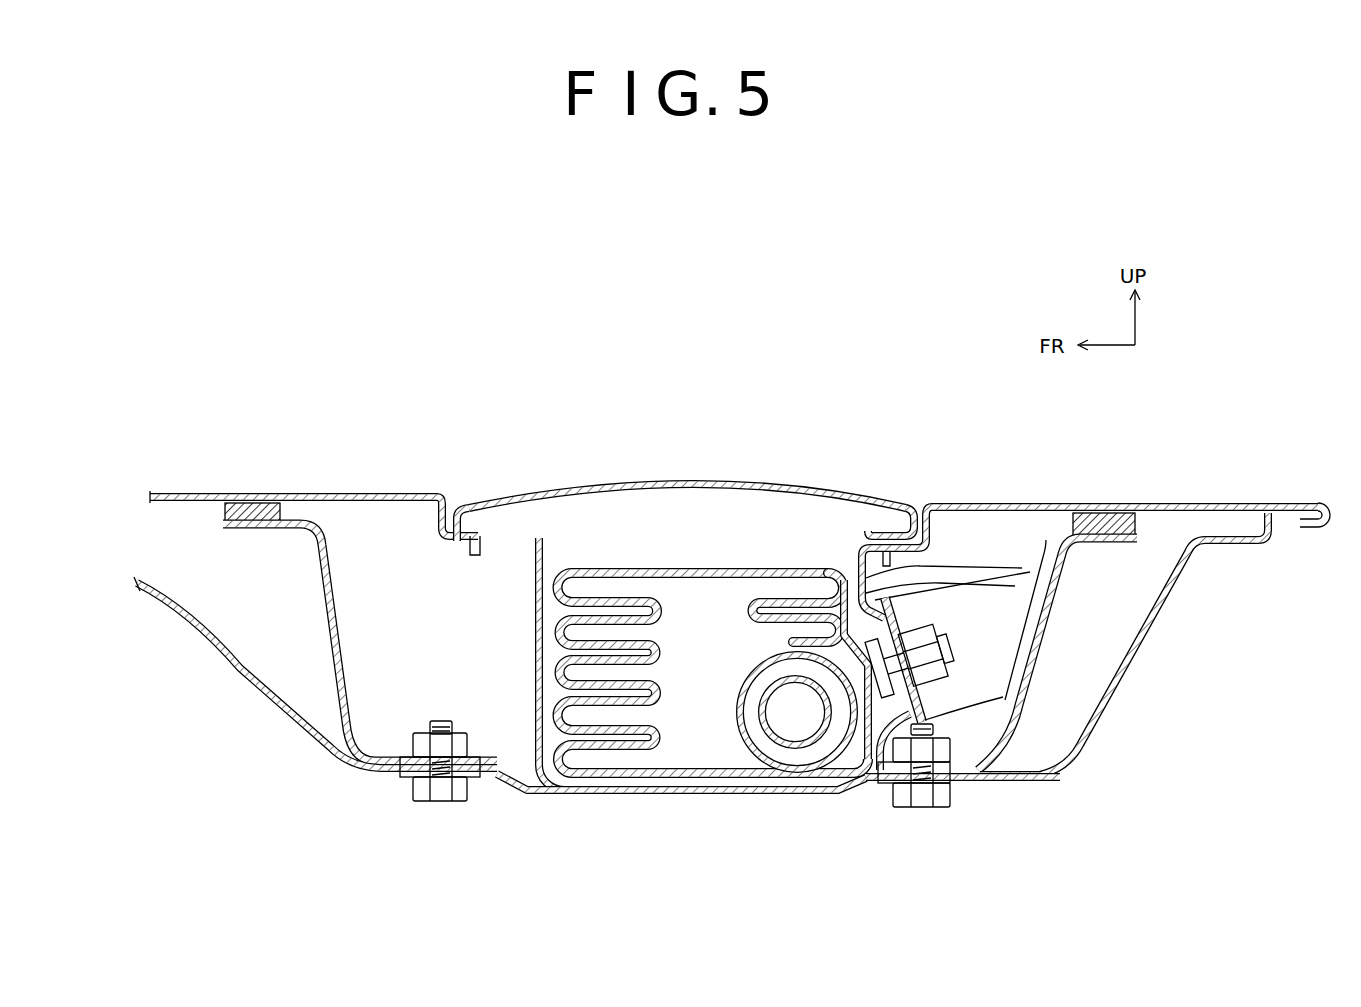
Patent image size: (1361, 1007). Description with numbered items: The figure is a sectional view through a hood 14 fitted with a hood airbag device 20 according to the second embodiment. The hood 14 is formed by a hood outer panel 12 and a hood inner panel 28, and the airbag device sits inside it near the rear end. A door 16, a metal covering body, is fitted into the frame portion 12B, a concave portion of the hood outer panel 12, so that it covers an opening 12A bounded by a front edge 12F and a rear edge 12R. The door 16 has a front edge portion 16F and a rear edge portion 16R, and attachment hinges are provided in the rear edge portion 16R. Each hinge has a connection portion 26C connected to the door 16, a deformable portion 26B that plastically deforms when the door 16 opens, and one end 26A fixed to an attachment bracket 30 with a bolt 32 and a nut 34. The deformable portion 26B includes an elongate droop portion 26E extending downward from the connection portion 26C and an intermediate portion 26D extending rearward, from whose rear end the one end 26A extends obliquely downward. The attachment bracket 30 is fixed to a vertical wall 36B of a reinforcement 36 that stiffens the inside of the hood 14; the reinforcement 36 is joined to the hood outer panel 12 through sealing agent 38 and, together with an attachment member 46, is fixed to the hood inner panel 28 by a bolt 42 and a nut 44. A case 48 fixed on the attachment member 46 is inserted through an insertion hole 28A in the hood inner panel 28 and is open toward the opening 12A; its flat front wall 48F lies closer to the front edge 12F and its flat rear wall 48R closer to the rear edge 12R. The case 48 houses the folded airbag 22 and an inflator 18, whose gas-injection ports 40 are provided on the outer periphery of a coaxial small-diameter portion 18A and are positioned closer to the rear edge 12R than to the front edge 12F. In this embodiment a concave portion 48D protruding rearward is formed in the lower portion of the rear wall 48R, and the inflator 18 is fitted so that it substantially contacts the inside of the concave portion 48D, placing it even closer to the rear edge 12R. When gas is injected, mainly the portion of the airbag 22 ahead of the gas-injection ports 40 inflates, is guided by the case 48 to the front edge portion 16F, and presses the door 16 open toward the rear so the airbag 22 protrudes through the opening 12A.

The hood outer panel 12 is at (372, 490).
The opening 12A is at (499, 523).
The frame portion 12B is at (440, 540).
The front edge 12F is at (478, 555).
The rear edge 12R is at (884, 542).
The hood 14 is at (245, 450).
The door 16 is at (668, 478).
The front edge portion 16F is at (448, 514).
The rear edge portion 16R is at (915, 518).
The inflator 18 is at (757, 688).
The small-diameter portion 18A is at (752, 683).
The hood airbag device 20 is at (720, 415).
The airbag 22 is at (714, 567).
The one end 26A is at (887, 781).
The deformable portion 26B is at (1017, 578).
The connection portion 26C is at (861, 545).
The intermediate portion 26D is at (985, 591).
The droop portion 26E is at (1028, 563).
The hood inner panel 28 is at (232, 670).
The insertion hole 28A is at (520, 765).
The attachment bracket 30 is at (1018, 570).
The bolt 32 is at (899, 622).
The nut 34 is at (925, 640).
The reinforcement 36 is at (320, 612).
The vertical wall 36B is at (1036, 625).
The sealing agent 38 is at (225, 513).
The gas-injection ports 40 is at (797, 653).
The bolt 42 is at (440, 803).
The nut 44 is at (418, 736).
The attachment member 46 is at (704, 796).
The case 48 is at (655, 693).
The concave portion 48D is at (840, 778).
The front wall 48F is at (533, 630).
The rear wall 48R is at (817, 578).